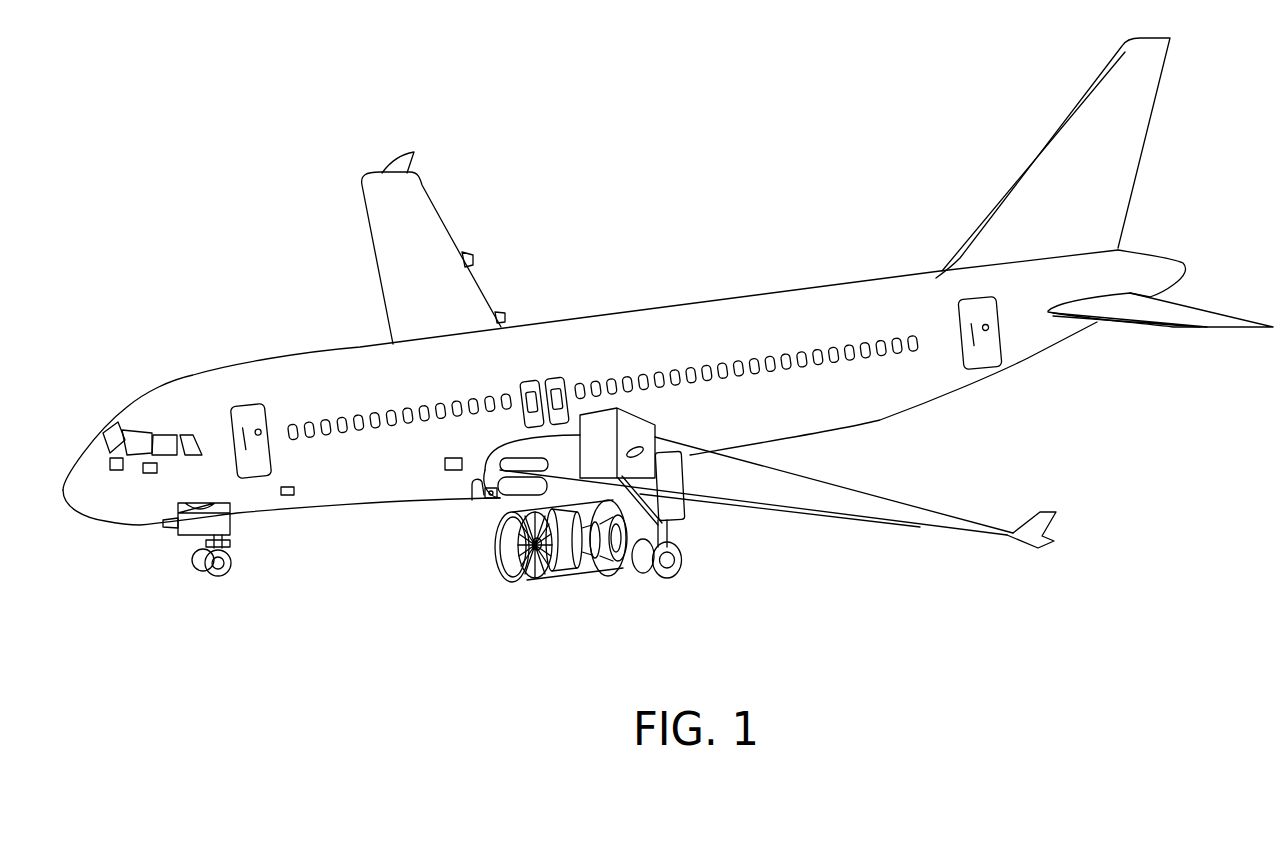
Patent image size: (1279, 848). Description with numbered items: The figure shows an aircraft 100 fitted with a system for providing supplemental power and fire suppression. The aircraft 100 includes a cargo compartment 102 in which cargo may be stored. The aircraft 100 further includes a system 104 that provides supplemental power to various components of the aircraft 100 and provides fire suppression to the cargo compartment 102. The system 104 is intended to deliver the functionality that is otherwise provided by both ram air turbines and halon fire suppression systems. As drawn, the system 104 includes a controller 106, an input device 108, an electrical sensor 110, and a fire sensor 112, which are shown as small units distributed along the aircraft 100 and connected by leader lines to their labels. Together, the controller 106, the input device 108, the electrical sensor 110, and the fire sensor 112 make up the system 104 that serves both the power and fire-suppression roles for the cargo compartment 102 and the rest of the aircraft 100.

The aircraft 100 is at (781, 205).
The cargo compartment 102 is at (438, 482).
The system 104 is at (496, 505).
The controller 106 is at (447, 459).
The input device 108 is at (118, 470).
The electrical sensor 110 is at (150, 473).
The fire sensor 112 is at (287, 487).